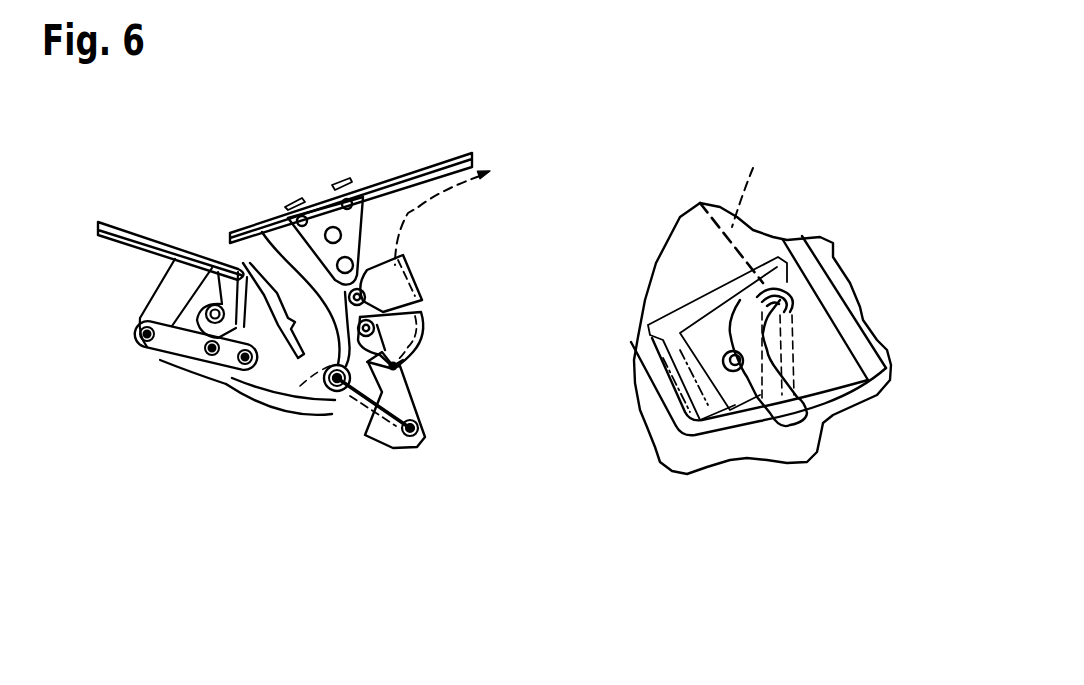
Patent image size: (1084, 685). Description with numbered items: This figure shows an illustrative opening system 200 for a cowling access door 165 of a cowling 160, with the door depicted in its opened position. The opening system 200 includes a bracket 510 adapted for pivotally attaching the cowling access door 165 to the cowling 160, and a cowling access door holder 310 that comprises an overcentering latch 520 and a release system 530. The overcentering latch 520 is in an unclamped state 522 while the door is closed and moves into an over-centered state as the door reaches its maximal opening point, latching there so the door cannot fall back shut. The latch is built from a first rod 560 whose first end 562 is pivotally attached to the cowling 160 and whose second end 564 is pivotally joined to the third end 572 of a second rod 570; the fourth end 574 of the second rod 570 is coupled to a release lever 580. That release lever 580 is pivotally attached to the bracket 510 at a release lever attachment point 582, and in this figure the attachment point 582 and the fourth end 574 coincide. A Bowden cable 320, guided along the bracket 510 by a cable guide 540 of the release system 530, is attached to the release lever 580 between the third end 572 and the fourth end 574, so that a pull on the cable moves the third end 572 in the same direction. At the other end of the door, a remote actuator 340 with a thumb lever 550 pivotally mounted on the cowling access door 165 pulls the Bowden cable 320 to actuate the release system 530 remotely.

The cowling 160 is at (167, 243).
The cowling access door 165 is at (440, 160).
The opening system 200 is at (532, 126).
The cowling access door holder 310 is at (275, 513).
The Bowden cable 320 is at (412, 211).
The remote actuator 340 is at (752, 468).
The bracket 510 is at (270, 418).
The overcentering latch 520 is at (193, 380).
The unclamped state 522 is at (236, 402).
The release system 530 is at (418, 396).
The cable guide 540 is at (423, 270).
The thumb lever 550 is at (790, 388).
The first rod 560 is at (145, 357).
The first end 562 is at (133, 331).
The second end 564 is at (308, 287).
The second rod 570 is at (345, 410).
The third end 572 is at (327, 400).
The fourth end 574 is at (428, 430).
The release lever 580 is at (405, 361).
The release lever attachment point 582 is at (420, 440).